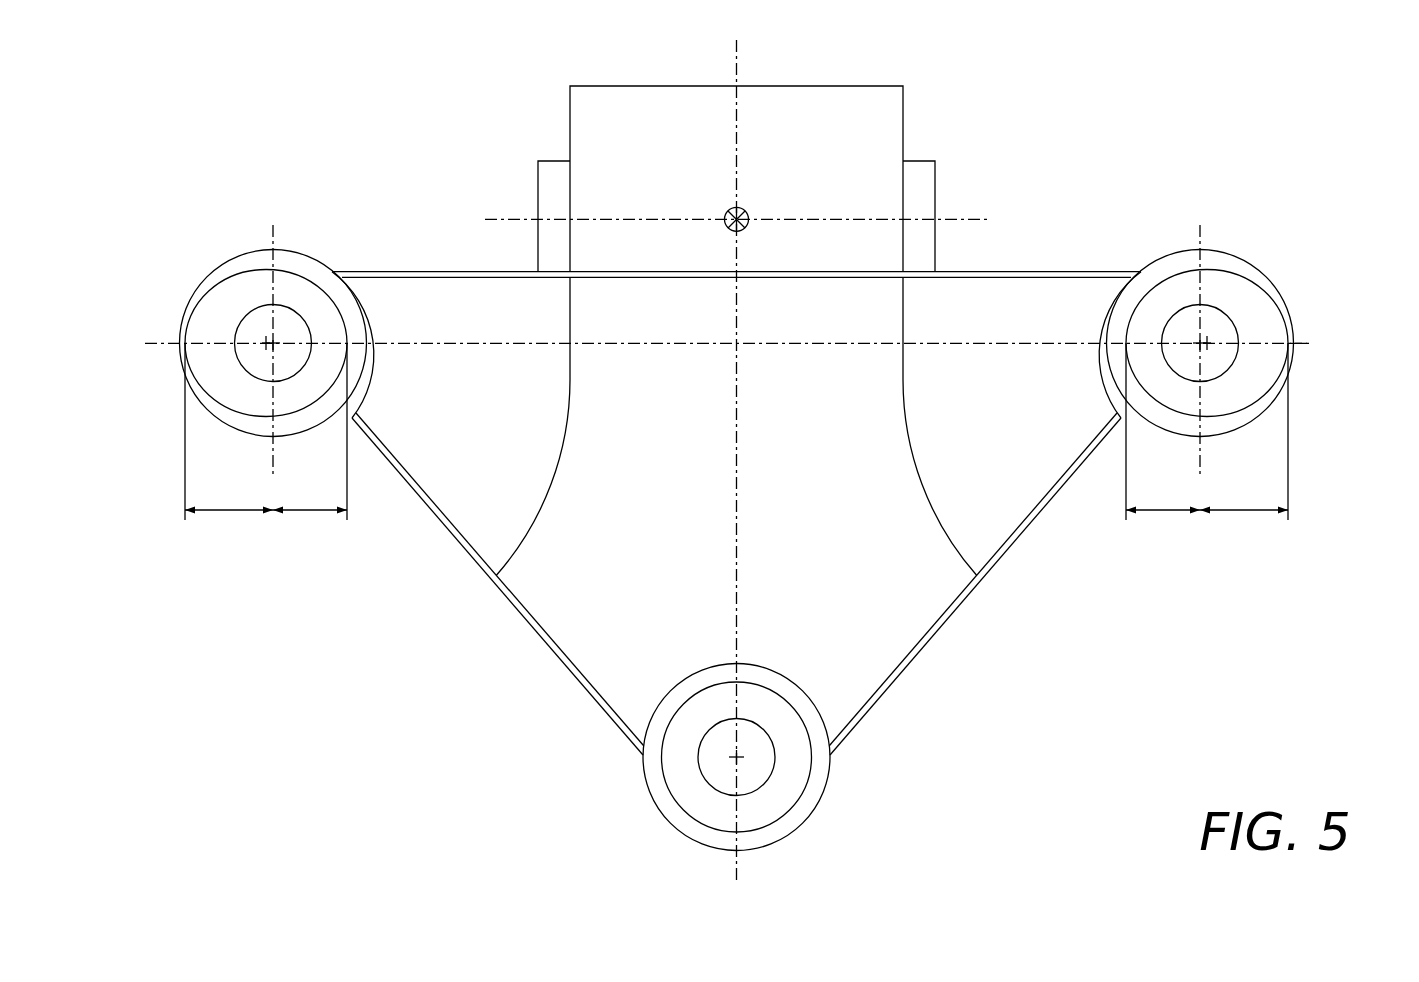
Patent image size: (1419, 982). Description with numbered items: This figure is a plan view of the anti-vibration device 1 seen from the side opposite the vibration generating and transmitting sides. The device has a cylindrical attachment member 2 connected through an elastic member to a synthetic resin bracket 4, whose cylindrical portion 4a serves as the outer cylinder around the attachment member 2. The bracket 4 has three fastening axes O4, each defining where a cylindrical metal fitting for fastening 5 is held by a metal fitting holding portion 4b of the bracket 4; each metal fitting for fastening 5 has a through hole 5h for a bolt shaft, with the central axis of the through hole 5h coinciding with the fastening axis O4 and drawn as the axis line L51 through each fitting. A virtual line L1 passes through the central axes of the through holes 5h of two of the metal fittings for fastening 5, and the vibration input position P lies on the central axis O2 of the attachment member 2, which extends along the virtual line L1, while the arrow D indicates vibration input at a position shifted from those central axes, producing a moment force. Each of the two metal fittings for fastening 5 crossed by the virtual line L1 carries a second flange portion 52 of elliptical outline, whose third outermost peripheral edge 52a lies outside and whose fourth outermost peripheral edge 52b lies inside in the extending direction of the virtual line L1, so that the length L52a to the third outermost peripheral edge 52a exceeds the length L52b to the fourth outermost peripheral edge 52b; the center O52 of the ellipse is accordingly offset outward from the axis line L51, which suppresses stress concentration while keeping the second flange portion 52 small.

The anti-vibration device 1 is at (1079, 631).
The attachment member 2 is at (928, 168).
The bracket 4 is at (634, 569).
The cylindrical portion 4a is at (781, 113).
The metal fitting holding portion 4b is at (238, 256).
The metal fitting for fastening 5 is at (232, 416).
The through hole 5h is at (286, 362).
The second flange portion 52 is at (736, 504).
The third outermost peripheral edge 52a is at (183, 360).
The fourth outermost peripheral edge 52b is at (351, 352).
The vibration input position P is at (731, 208).
The arrow indicating vibration input D is at (747, 211).
The central axis of the attachment member O2 is at (760, 219).
The fastening axis O4 is at (273, 343).
The center of the elliptical shape O52 is at (266, 343).
The virtual line L1 is at (767, 343).
The roller axis line L51 is at (737, 335).
The length of the third outermost peripheral edge L52a is at (736, 442).
The length of the fourth outermost peripheral edge L52b is at (736, 442).